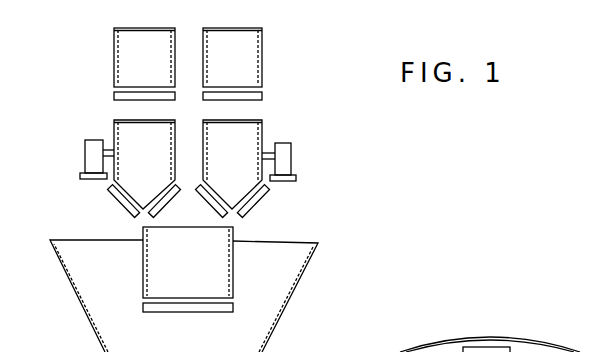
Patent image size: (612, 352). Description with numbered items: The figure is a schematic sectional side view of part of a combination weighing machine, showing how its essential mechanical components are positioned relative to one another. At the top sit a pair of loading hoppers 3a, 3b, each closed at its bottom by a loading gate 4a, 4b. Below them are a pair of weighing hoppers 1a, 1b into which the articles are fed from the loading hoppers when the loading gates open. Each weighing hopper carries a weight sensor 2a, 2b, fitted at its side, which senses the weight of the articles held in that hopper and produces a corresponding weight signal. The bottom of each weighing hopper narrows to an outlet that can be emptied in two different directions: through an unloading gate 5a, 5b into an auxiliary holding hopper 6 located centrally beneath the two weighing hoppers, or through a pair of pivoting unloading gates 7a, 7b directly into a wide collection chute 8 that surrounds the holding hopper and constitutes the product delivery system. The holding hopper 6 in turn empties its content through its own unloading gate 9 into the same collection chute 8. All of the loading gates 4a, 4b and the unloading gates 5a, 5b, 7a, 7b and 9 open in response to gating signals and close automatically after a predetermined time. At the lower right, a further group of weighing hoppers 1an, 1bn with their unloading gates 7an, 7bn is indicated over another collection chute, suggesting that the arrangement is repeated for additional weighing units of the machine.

The weighing hopper 1a is at (113, 122).
The weighing hopper 1b is at (263, 123).
The weight sensor 2a is at (85, 151).
The weight sensor 2b is at (295, 157).
The loading hopper 3a is at (113, 45).
The loading hopper 3b is at (263, 45).
The loading gate 4a is at (113, 96).
The loading gate 4b is at (263, 96).
The unloading gate 5a is at (170, 207).
The unloading gate 5b is at (208, 207).
The auxiliary holding hopper 6 is at (235, 268).
The unloading gate 7a is at (117, 198).
The unloading gate 7b is at (262, 200).
The collection chute 8 is at (312, 264).
The unloading gate 9 is at (215, 313).
The n-th first feed hopper 1an is at (353, 344).
The n-th second feed hopper 1bn is at (487, 347).
The n-th first closure flaps 7an is at (387, 351).
The n-th second closure flaps 7bn is at (505, 347).